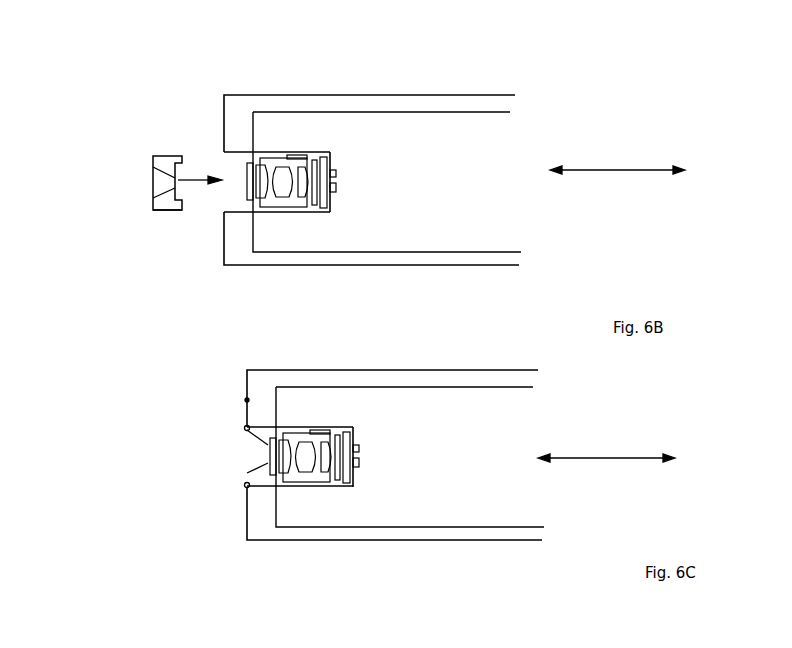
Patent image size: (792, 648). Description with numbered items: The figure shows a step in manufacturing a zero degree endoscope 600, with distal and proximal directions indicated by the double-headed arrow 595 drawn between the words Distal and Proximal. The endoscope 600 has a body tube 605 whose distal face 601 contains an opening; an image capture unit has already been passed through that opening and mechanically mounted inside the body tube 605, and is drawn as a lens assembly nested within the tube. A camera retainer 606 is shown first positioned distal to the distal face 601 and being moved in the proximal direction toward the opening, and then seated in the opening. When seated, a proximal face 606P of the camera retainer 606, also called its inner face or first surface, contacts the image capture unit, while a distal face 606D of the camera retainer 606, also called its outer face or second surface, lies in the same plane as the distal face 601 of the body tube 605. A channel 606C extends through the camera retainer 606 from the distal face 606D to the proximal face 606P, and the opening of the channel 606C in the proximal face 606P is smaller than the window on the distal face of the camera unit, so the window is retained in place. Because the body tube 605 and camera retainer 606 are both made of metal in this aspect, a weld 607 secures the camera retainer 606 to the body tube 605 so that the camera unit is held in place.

In FIG. 6B, the arrow 595 is at (615, 175).
In FIG. 6C, the arrow 595 is at (605, 463).
In FIG. 6B, the endoscope 600 is at (432, 80).
In FIG. 6C, the endoscope 600 is at (493, 358).
In FIG. 6B, the distal face 601 is at (220, 125).
In FIG. 6C, the distal face 601 is at (247, 400).
In FIG. 6B, the body tube 605 is at (303, 103).
In FIG. 6C, the body tube 605 is at (325, 382).
In FIG. 6B, the camera retainer 606 is at (155, 156).
In FIG. 6C, the camera retainer 606 is at (247, 458).
In FIG. 6B, the channel 606C is at (157, 180).
In FIG. 6B, the distal face 606D is at (152, 206).
In FIG. 6B, the proximal face 606P is at (182, 211).
In FIG. 6C, the weld 607 is at (247, 484).